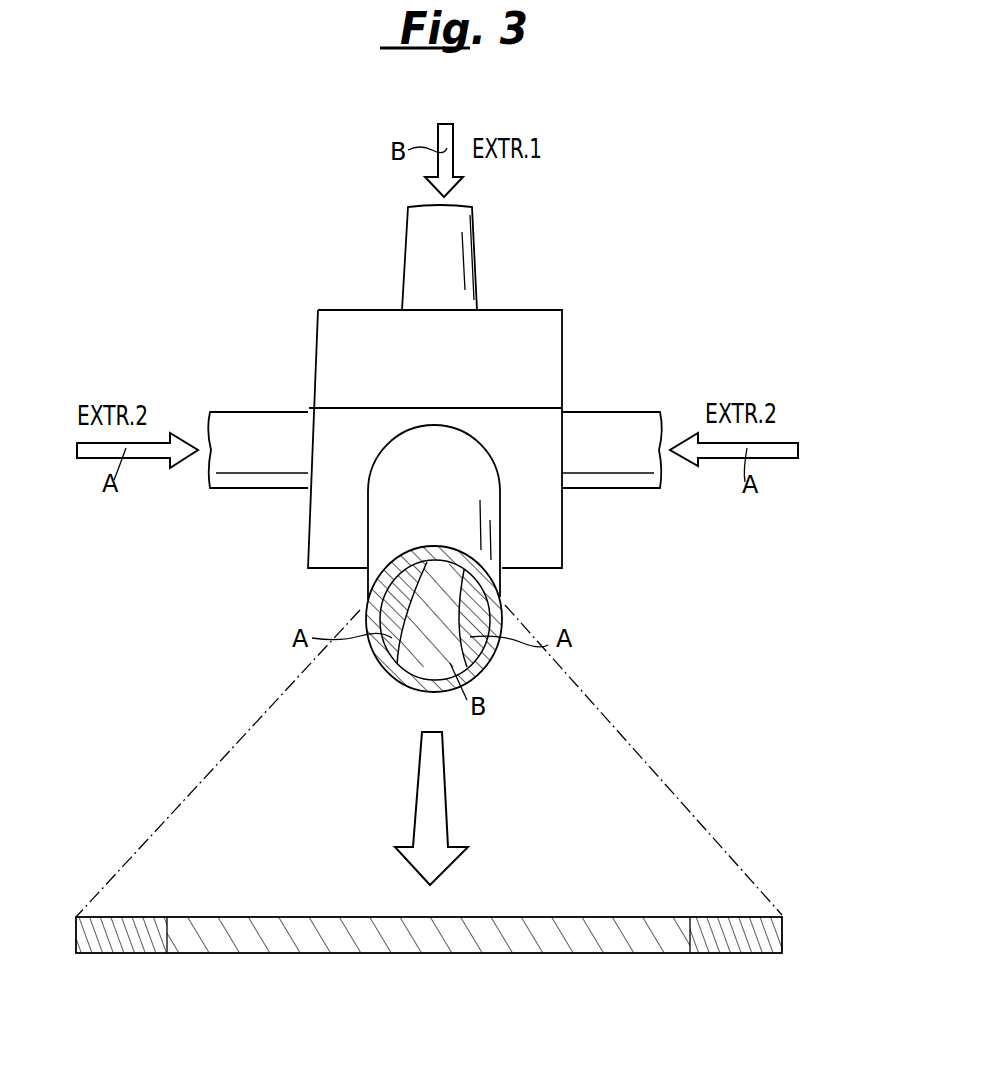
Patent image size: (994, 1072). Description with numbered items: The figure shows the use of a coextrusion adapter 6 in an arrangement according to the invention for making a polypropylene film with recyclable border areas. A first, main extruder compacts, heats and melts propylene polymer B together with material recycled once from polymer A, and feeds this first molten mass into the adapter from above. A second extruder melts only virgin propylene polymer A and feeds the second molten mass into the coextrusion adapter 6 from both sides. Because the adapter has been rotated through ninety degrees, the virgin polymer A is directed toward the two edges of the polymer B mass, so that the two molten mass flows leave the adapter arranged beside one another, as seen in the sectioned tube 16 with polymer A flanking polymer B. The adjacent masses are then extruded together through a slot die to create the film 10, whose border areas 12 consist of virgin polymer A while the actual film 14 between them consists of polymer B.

The coextrusion adapter 6 is at (596, 530).
The film 10 is at (460, 950).
The border areas 12 is at (115, 937).
The actual film 14 is at (376, 937).
The arrangement of molten mass flows 16 is at (493, 620).